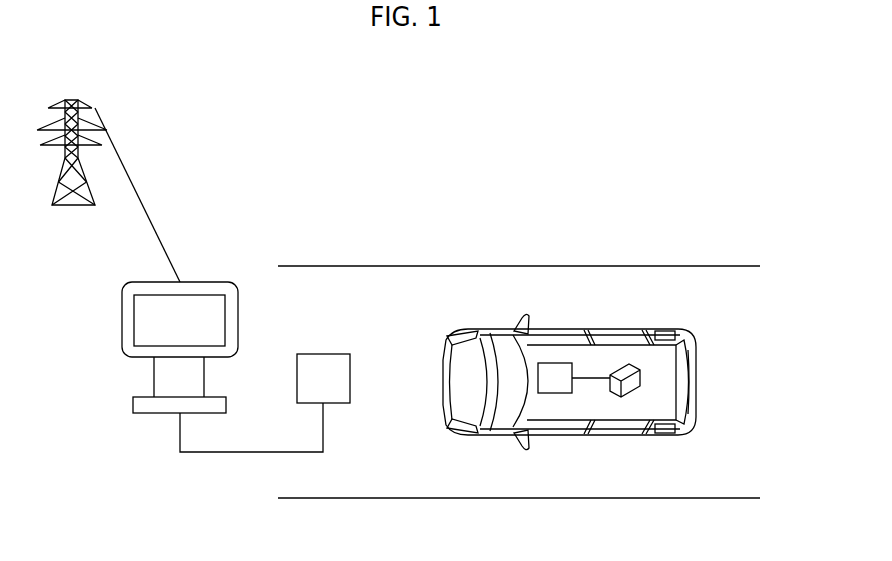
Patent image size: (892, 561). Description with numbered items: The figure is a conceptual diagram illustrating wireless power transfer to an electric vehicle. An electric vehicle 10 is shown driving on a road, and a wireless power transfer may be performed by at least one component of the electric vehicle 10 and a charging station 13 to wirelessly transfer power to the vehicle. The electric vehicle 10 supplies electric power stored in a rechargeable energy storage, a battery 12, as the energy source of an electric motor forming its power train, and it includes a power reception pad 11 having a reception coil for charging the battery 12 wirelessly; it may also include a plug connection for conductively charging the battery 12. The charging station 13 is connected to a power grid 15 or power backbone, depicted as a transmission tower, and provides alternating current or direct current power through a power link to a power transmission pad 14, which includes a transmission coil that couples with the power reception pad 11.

The electric vehicle 10 is at (584, 330).
The power reception pad 11 is at (553, 362).
The battery 12 is at (626, 364).
The charging station 13 is at (206, 282).
The power transmission pad 14 is at (323, 354).
The power grid 15 is at (71, 101).